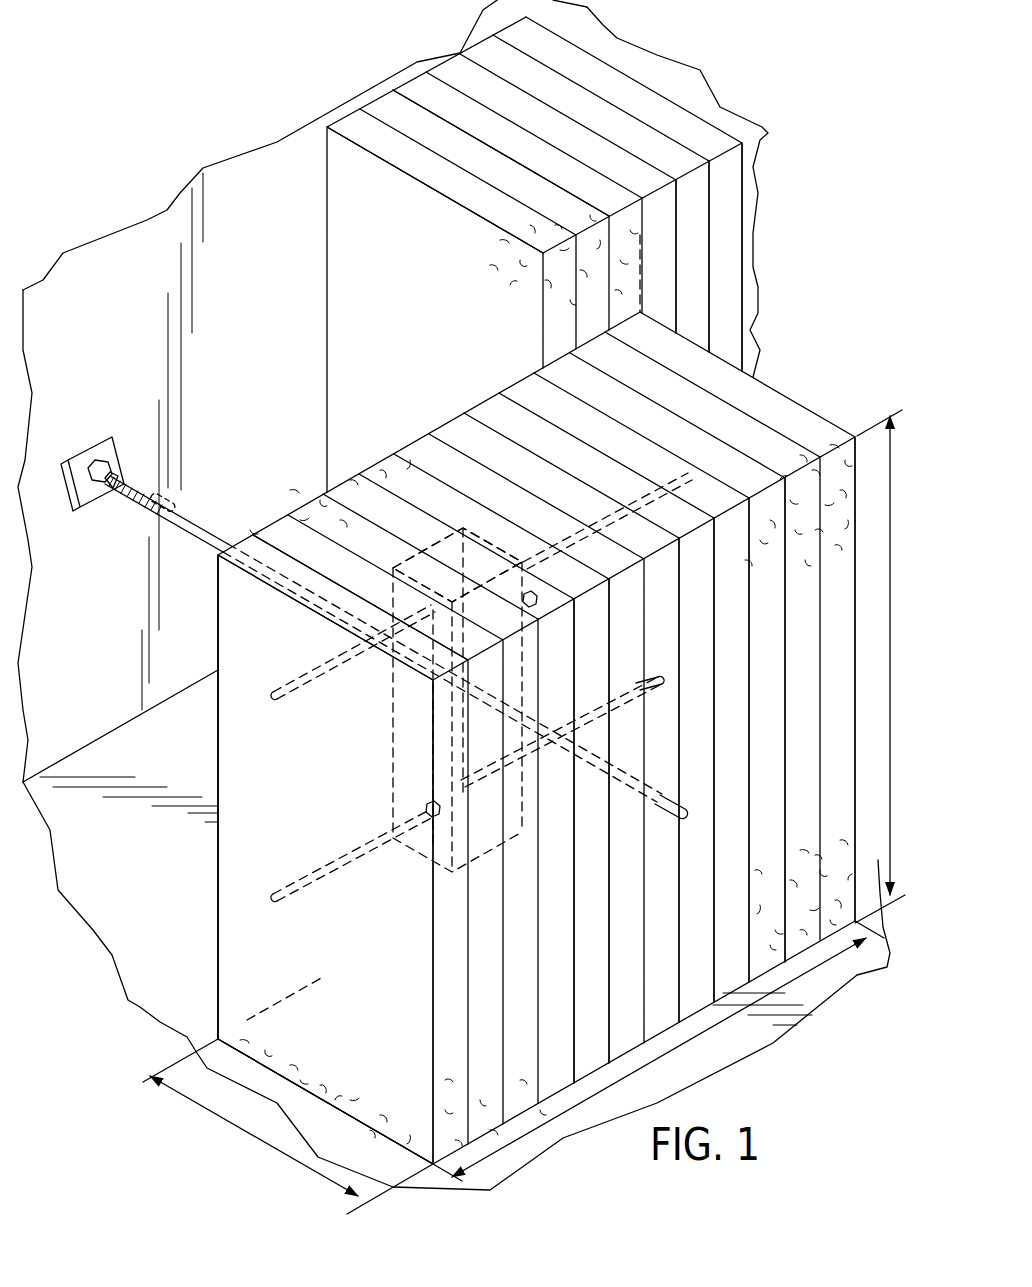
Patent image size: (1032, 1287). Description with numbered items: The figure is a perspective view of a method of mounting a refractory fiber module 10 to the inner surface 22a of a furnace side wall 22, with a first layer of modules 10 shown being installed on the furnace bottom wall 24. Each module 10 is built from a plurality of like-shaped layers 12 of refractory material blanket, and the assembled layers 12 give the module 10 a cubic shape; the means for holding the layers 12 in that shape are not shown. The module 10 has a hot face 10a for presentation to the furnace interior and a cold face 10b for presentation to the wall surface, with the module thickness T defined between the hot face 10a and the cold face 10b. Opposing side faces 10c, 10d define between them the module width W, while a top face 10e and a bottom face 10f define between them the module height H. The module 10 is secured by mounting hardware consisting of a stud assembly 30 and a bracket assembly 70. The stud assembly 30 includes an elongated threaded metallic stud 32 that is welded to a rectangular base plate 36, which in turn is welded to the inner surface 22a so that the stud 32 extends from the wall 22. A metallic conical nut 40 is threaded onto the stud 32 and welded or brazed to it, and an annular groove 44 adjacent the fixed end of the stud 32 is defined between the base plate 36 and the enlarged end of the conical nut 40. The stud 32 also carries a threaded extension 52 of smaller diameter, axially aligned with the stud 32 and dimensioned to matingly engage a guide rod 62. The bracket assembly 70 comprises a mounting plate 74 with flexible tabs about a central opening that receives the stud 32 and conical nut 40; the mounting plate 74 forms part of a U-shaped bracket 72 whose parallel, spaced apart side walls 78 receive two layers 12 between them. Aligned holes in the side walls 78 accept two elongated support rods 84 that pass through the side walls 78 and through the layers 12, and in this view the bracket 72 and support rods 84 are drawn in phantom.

The refractory fiber module 10 is at (722, 68).
The hot face 10a is at (723, 278).
The cold face 10b is at (375, 100).
The side face 10c is at (253, 973).
The side face 10d is at (833, 430).
The top face 10e is at (608, 85).
The bottom face 10f is at (315, 1087).
The layers 12 is at (660, 252).
The furnace side wall 22 is at (165, 212).
The inner surface 22a is at (150, 370).
The furnace bottom wall 24 is at (150, 958).
The stud assembly 30 is at (359, 660).
The stud 32 is at (140, 485).
The base plate 36 is at (110, 450).
The conical nut 40 is at (107, 493).
The annular groove 44 is at (67, 480).
The threaded extension 52 is at (183, 500).
The guide rod 62 is at (203, 543).
The bracket assembly 70 is at (469, 746).
The U-shaped bracket 72 is at (481, 528).
The mounting plate 74 is at (445, 543).
The side walls 78 is at (540, 600).
The support rods 84 is at (290, 693).
The module height H is at (880, 666).
The module width W is at (636, 1068).
The module thickness T is at (248, 1130).